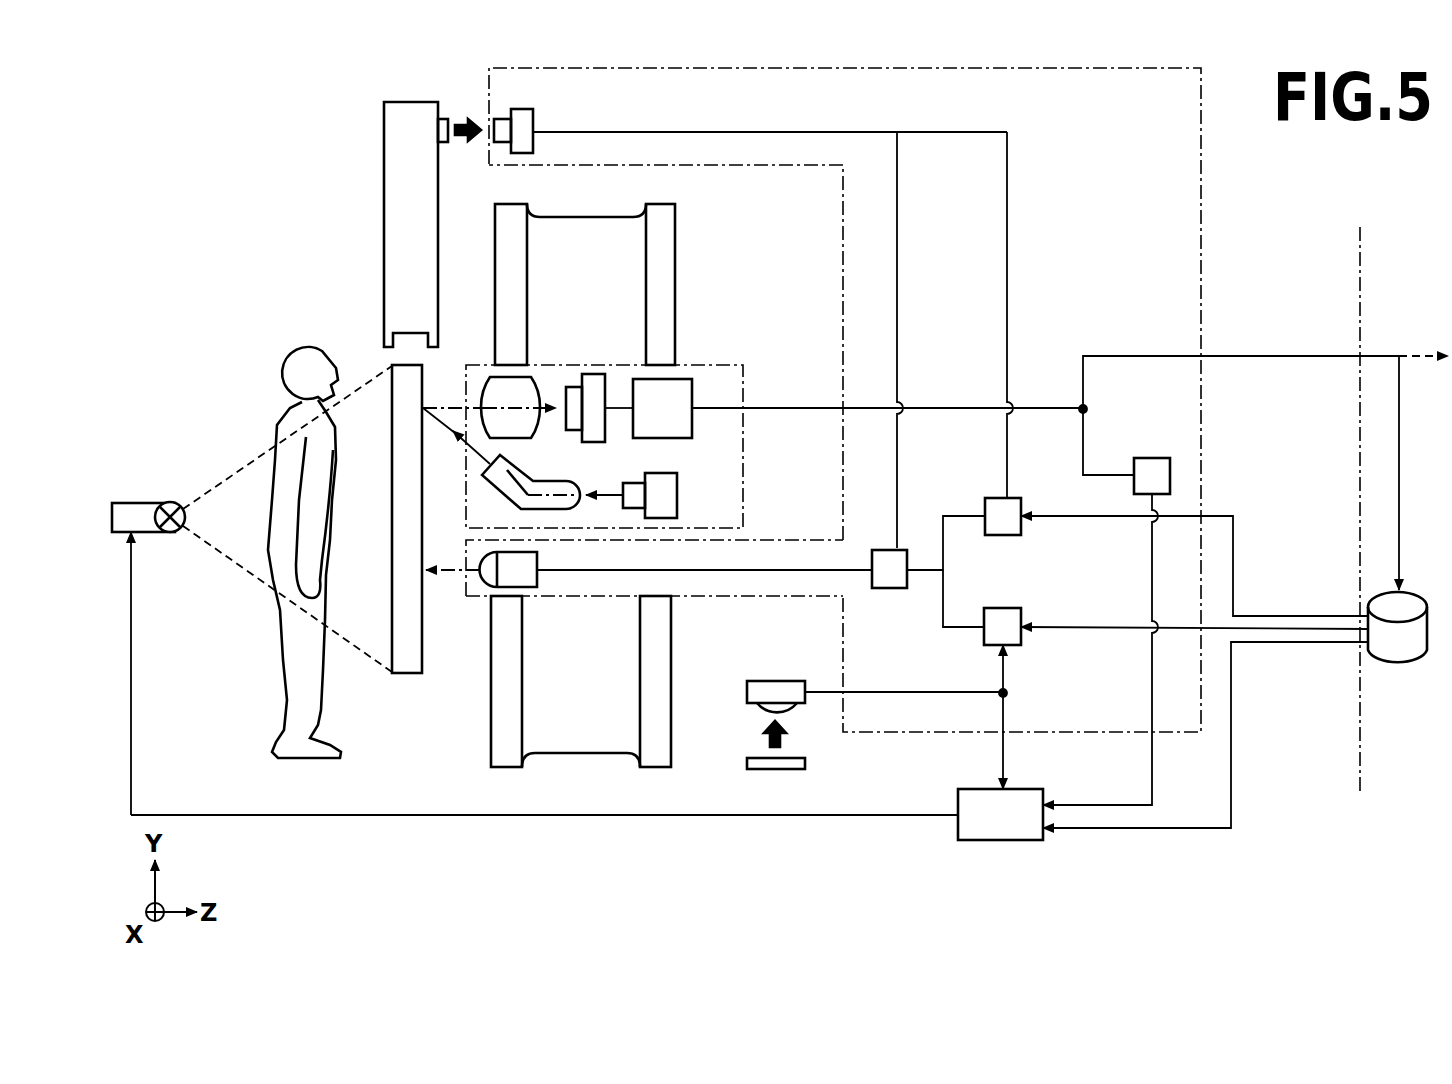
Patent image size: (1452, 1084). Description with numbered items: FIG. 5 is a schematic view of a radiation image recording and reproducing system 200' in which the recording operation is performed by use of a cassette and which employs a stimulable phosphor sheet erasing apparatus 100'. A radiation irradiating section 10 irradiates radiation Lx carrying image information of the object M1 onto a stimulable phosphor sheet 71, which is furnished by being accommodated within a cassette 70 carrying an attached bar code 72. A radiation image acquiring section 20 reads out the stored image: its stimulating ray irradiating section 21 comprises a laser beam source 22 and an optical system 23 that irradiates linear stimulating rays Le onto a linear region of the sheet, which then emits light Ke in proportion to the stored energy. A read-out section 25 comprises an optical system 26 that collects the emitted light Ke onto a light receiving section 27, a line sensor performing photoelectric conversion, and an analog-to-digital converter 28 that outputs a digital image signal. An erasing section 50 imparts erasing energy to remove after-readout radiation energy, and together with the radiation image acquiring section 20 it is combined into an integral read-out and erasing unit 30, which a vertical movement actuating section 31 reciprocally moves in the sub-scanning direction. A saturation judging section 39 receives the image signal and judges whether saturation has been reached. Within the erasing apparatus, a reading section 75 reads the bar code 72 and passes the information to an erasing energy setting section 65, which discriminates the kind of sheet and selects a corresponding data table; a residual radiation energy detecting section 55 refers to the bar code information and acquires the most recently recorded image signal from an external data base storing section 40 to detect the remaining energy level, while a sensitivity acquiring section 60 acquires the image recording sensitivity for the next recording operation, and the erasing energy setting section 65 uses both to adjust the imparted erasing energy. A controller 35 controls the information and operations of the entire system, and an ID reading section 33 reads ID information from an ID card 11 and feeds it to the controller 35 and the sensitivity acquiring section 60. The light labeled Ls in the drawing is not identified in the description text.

The radiation irradiating section 10 is at (178, 503).
The ID card 11 is at (790, 768).
The radiation image acquiring section 20 is at (688, 365).
The stimulating ray irradiating section 21 is at (637, 643).
The laser beam source 22 is at (657, 520).
The optical system 23 is at (535, 512).
The read-out section 25 is at (637, 291).
The optical system 26 is at (518, 375).
The light receiving section 27 is at (575, 385).
The analog-to-digital converter 28 is at (660, 378).
The read-out and erasing unit 30 is at (764, 348).
The vertical movement actuating section 31 is at (583, 222).
The ID reading section 33 is at (752, 681).
The controller 35 is at (1003, 841).
The saturation judging section 39 is at (1152, 458).
The data base storing section 40 is at (1398, 664).
The erasing section 50 is at (518, 575).
The residual radiation energy detecting section 55 is at (1003, 536).
The sensitivity acquiring section 60 is at (1010, 646).
The erasing energy setting section 65 is at (887, 589).
The cassette 70 is at (397, 115).
The stimulable phosphor sheet 71 is at (408, 675).
The bar code 72 is at (448, 120).
The reading section 75 is at (528, 117).
The stimulable phosphor sheet erasing apparatus 100' is at (1278, 511).
The radiation image recording and reproducing system 200' is at (889, 400).
The object M1 is at (290, 360).
The emitted light Ke is at (447, 405).
The stimulating rays Le is at (443, 425).
The light source beam Ls is at (428, 574).
The radiation Lx is at (355, 633).